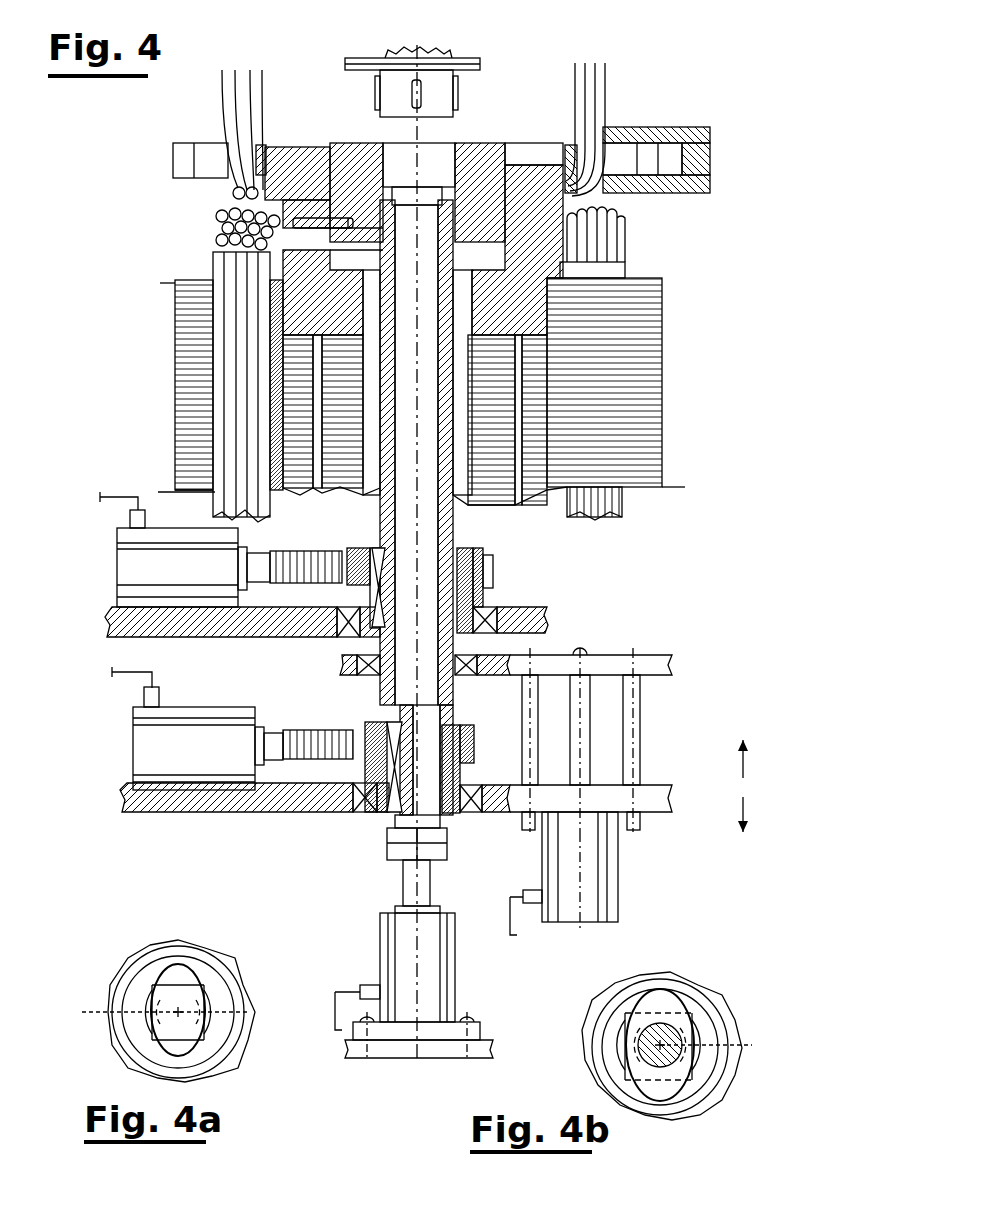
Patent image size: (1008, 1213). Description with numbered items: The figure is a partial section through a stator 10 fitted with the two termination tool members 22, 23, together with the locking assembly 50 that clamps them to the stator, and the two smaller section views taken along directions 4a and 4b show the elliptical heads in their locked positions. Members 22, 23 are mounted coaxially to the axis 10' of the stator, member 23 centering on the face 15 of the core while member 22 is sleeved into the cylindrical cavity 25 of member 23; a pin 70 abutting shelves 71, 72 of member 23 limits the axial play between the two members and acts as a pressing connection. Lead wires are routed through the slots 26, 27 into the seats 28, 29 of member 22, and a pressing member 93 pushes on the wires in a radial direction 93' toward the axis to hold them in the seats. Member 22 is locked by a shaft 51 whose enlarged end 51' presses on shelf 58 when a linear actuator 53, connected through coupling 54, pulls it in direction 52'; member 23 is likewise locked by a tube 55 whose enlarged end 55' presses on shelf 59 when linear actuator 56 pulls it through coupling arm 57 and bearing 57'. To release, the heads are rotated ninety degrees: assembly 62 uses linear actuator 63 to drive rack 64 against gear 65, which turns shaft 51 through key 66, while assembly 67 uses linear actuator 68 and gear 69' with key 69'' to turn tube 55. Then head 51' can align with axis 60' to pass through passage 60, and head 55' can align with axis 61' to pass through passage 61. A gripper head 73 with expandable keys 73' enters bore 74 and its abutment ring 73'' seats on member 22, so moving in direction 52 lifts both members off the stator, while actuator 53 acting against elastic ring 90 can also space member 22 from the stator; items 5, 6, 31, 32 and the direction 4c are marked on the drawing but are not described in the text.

In FIG. 4, the gripper head 73 is at (445, 66).
In FIG. 4, the expandable keys 73' is at (375, 63).
In FIG. 4, the abutment ring 73'' is at (378, 55).
In FIG. 4, the slot 27 is at (204, 145).
In FIG. 4, the member 22 is at (255, 180).
In FIG. 4A, the member 22 is at (226, 962).
In FIG. 4, the housing insert 32 is at (270, 178).
In FIG. 4, the section direction 4a- 4a is at (347, 188).
In FIG. 4, the elastic ring 90 is at (378, 185).
In FIG. 4, the bore 74 is at (441, 158).
In FIG. 4, the cylindrical cavity 25 is at (516, 190).
In FIG. 4, the section direction 4b- 4b is at (370, 248).
In FIG. 4, the shaft 51 is at (446, 452).
In FIG. 4, the enlarged end 51' is at (424, 510).
In FIG. 4A, the enlarged end 51' is at (186, 976).
In FIG. 4, the enlarged end 55' is at (243, 404).
In FIG. 4B, the enlarged end 55' is at (659, 1009).
In FIG. 4, the tube 55 is at (425, 435).
In FIG. 4, the axis 10' is at (364, 521).
In FIG. 4, the face 15 is at (177, 282).
In FIG. 4, the shelf 71 is at (283, 284).
In FIG. 4, the shelf 72 is at (278, 218).
In FIG. 4, the pin 70 is at (296, 224).
In FIG. 4, the seat 29 is at (262, 176).
In FIG. 4, the drive unit 5 is at (110, 192).
In FIG. 4, the pressing member 93 is at (661, 136).
In FIG. 4, the radial direction 93' is at (757, 120).
In FIG. 4, the housing 6 is at (718, 183).
In FIG. 4, the slot 26 is at (610, 153).
In FIG. 4, the seat 28 is at (574, 190).
In FIG. 4, the cable guide 31 is at (598, 196).
In FIG. 4, the member 23 is at (577, 300).
In FIG. 4B, the member 23 is at (705, 995).
In FIG. 4, the stator 10 is at (704, 334).
In FIG. 4, the section direction 4c- 4c is at (688, 513).
In FIG. 4, the assembly 67 is at (112, 480).
In FIG. 4, the assembly 50 is at (103, 571).
In FIG. 4, the linear actuator 68 is at (132, 588).
In FIG. 4, the key 69'' is at (330, 612).
In FIG. 4, the gear 69' is at (504, 589).
In FIG. 4, the coupling arm 57 is at (506, 715).
In FIG. 4, the bearing 57' is at (341, 703).
In FIG. 4, the assembly 62 is at (284, 701).
In FIG. 4, the linear actuator 63 is at (133, 738).
In FIG. 4, the rack 64 is at (318, 758).
In FIG. 4, the key 66 is at (376, 797).
In FIG. 4, the gear 65 is at (456, 728).
In FIG. 4, the linear actuator 56 is at (612, 880).
In FIG. 4, the direction 52 is at (769, 756).
In FIG. 4, the direction 52' is at (769, 804).
In FIG. 4, the coupling 54 is at (389, 850).
In FIG. 4, the linear actuator 53 is at (441, 980).
In FIG. 4A, the shelf 58 is at (148, 965).
In FIG. 4A, the passage 60 is at (226, 994).
In FIG. 4A, the axis 60' is at (149, 988).
In FIG. 4B, the passage 61 is at (640, 1025).
In FIG. 4B, the shelf 59 is at (712, 1022).
In FIG. 4B, the axis 61' is at (724, 1071).